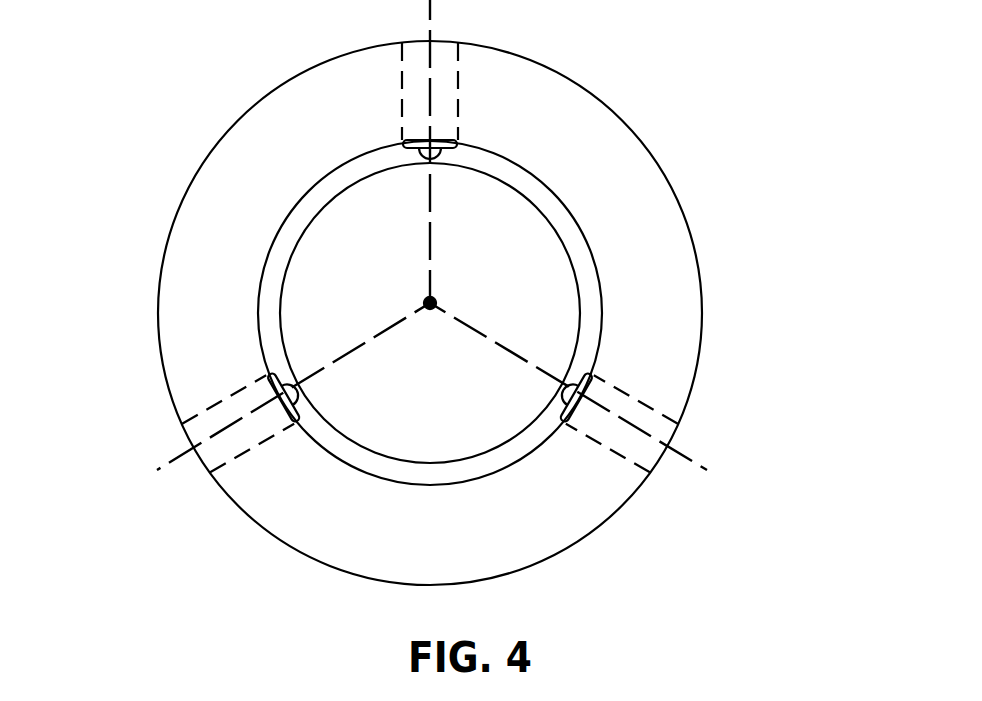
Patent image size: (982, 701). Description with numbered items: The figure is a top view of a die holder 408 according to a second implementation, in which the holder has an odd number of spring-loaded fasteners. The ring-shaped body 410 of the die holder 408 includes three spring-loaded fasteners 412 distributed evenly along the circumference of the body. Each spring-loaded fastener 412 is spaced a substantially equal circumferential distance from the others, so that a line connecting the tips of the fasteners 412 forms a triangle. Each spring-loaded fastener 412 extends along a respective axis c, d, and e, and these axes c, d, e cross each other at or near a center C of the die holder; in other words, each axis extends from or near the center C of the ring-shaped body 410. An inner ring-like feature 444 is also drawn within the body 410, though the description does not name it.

The die holder 408 is at (148, 135).
The ring-shaped body 410 is at (605, 132).
The spring-loaded fastener 412 is at (462, 72).
The ring 444 is at (578, 270).
The center C is at (436, 302).
The axis c is at (385, 332).
The axis d is at (433, 251).
The axis e is at (478, 335).